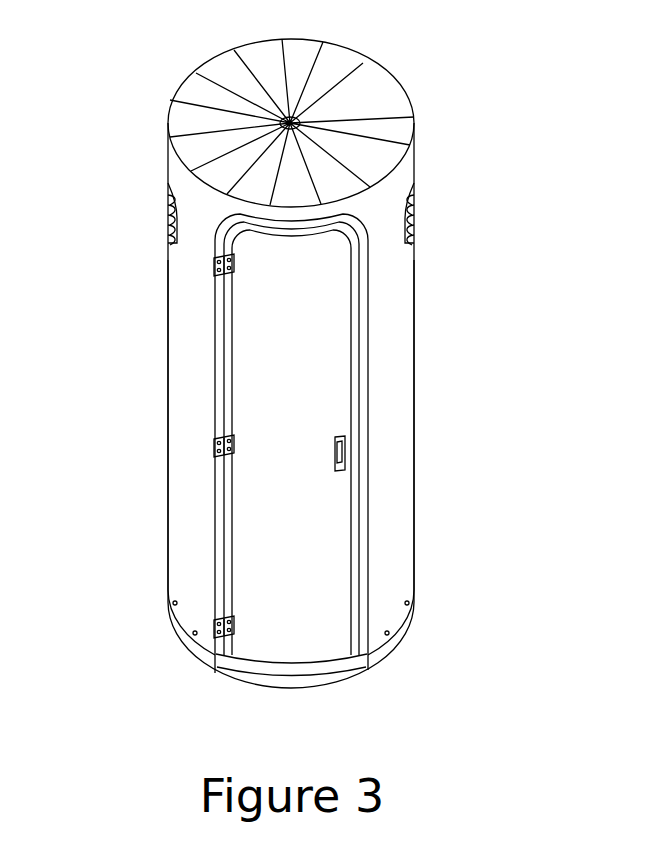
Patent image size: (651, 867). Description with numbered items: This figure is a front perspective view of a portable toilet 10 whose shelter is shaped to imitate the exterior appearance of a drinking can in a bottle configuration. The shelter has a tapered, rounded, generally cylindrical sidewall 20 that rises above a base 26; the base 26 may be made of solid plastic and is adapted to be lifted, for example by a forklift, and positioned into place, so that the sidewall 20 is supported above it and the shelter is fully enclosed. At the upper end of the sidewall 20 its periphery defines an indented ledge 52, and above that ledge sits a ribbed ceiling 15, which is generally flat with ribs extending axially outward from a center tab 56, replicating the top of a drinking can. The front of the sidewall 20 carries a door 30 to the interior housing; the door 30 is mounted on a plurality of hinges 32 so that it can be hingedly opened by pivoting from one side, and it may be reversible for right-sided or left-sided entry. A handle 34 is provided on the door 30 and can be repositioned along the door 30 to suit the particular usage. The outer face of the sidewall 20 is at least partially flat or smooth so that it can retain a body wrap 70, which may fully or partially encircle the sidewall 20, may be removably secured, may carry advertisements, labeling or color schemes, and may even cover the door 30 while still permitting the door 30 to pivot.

The portable toilet 10 is at (185, 252).
The ribbed ceiling 15 is at (172, 106).
The indented ledge 52 is at (413, 145).
The center tab 56 is at (298, 110).
The body wrap 70 is at (414, 330).
The sidewall 20 is at (383, 405).
The base 26 is at (203, 655).
The door 30 is at (343, 580).
The hinges 32 is at (213, 265).
The handle 34 is at (345, 450).